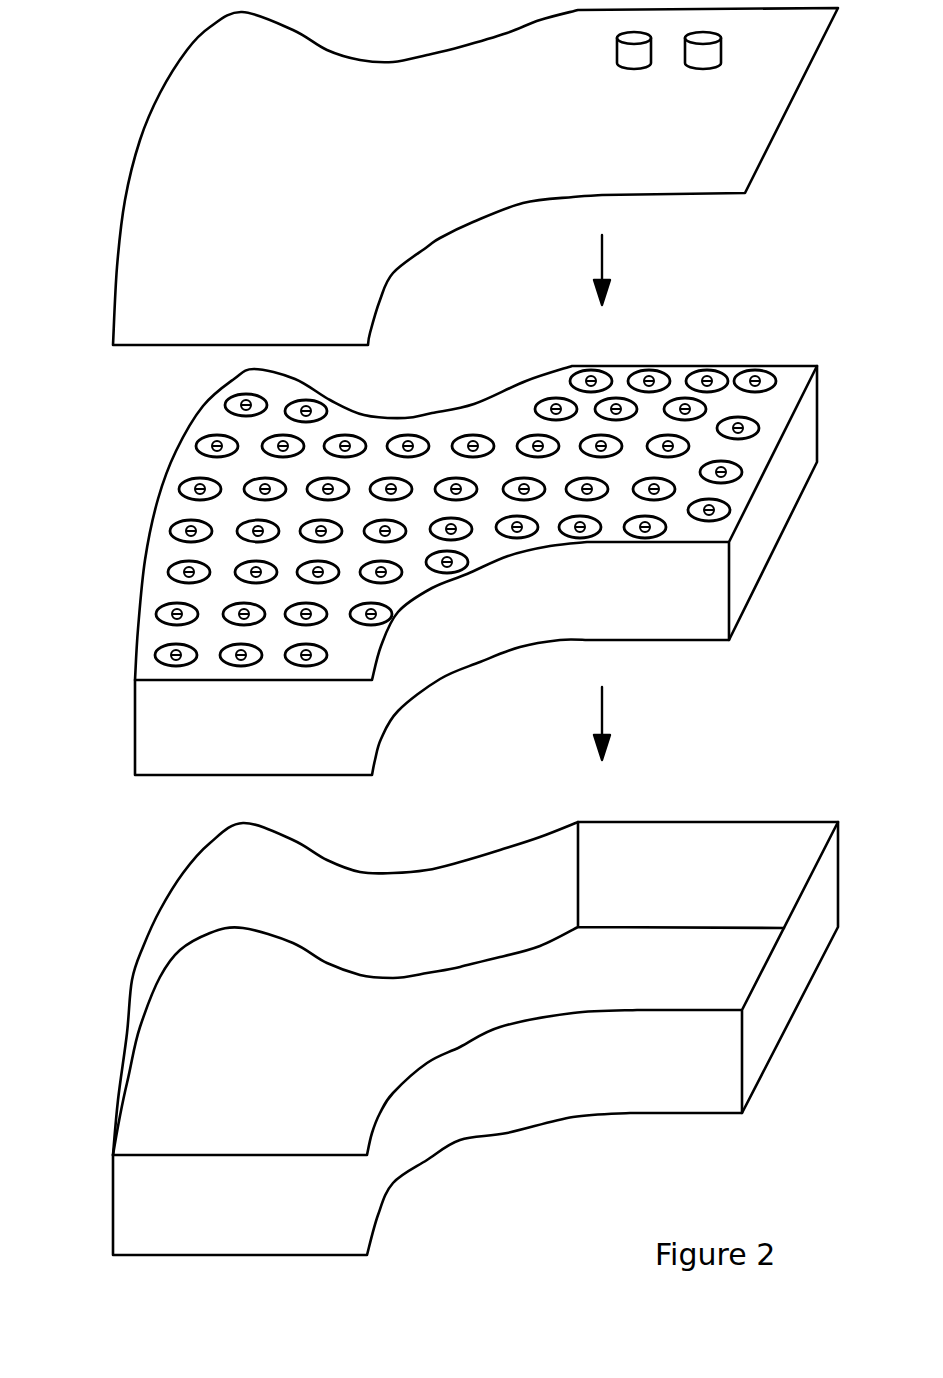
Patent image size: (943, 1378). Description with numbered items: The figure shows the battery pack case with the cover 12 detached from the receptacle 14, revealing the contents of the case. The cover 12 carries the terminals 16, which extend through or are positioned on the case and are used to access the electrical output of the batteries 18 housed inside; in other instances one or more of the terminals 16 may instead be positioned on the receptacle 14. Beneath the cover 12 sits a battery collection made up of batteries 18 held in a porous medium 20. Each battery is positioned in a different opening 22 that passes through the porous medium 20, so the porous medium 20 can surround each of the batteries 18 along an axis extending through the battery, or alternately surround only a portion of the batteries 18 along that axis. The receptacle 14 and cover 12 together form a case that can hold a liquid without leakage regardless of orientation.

The cover 12 is at (143, 280).
The receptacle 14 is at (132, 975).
The terminals 16 is at (617, 50).
The batteries 18 is at (165, 608).
The porous medium 20 is at (153, 722).
The opening 22 is at (178, 489).